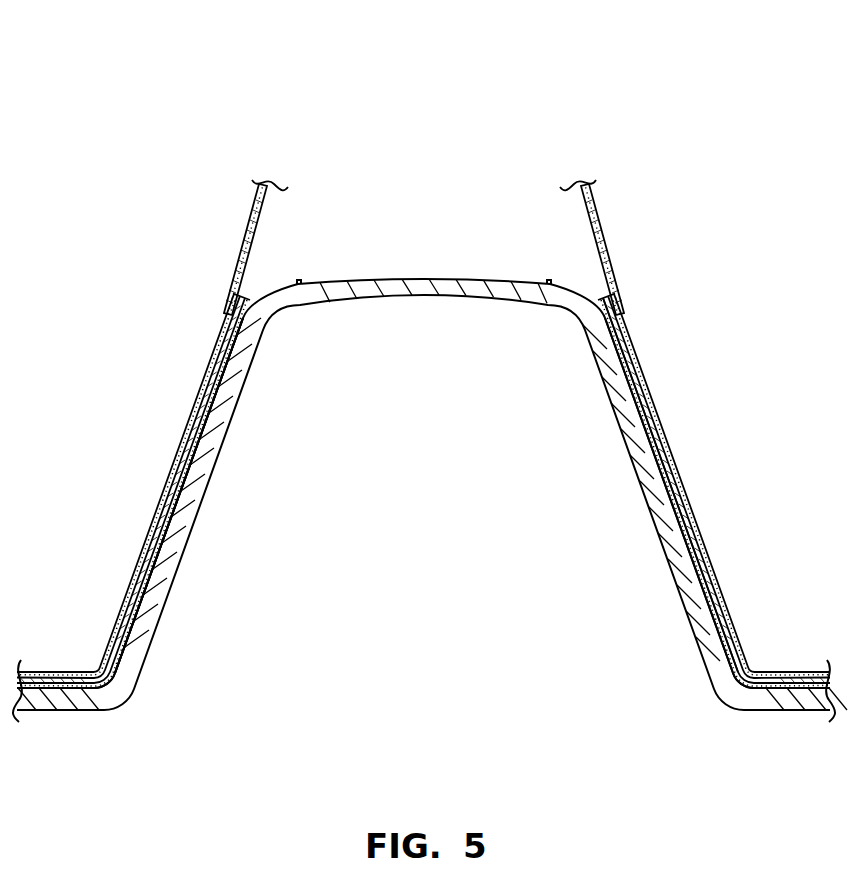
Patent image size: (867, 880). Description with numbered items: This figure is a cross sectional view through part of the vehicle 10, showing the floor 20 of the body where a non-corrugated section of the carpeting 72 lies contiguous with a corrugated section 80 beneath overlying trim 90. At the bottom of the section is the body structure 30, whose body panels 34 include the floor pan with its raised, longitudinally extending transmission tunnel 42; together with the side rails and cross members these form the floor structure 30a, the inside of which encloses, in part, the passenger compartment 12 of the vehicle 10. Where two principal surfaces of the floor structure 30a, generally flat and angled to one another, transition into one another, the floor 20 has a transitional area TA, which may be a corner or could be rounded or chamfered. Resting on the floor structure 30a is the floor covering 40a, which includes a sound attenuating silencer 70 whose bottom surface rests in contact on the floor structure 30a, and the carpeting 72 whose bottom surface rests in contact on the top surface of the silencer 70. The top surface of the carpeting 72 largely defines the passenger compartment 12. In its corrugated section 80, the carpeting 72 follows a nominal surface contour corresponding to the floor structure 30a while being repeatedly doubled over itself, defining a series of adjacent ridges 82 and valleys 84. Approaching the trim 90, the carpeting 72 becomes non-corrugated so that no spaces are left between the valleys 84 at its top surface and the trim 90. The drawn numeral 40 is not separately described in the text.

The vehicle 10 is at (678, 88).
The passenger compartment 12 is at (515, 152).
The floor 20 is at (727, 132).
The body structure 30 is at (74, 717).
The floor structure 30a is at (150, 666).
The body panels 34 is at (208, 510).
The transmission tunnel 42 is at (208, 510).
The reinforcement patch 40 is at (596, 603).
The floor covering 40a is at (646, 485).
The silencer 70 is at (698, 633).
The carpeting 72 is at (697, 592).
The corrugated section 80 is at (190, 417).
The ridges 82 is at (175, 482).
The valleys 84 is at (172, 517).
The trim 90 is at (247, 240).
The transitional area TA is at (99, 658).